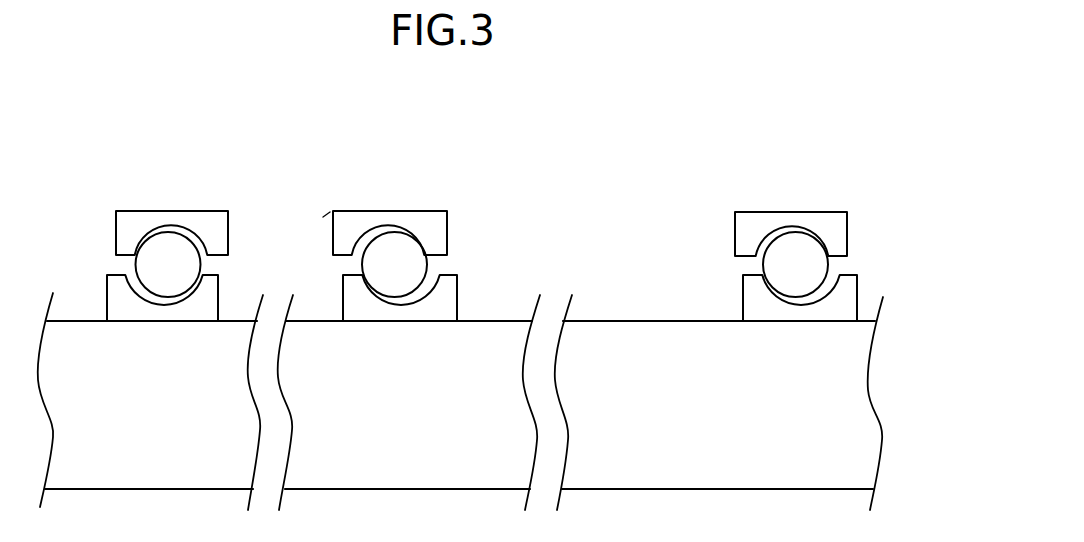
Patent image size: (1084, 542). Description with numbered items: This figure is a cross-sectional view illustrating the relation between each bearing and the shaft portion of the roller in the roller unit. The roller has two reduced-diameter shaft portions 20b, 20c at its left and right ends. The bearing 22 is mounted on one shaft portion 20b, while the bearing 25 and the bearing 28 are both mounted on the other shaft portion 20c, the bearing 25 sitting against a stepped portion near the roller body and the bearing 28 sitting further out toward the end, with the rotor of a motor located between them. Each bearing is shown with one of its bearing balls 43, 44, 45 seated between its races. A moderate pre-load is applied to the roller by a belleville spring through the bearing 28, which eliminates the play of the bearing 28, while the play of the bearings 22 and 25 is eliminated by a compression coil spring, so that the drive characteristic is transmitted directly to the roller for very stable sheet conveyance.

The shaft portion 20b is at (673, 340).
The shaft portion 20c is at (85, 342).
The bearing 22 is at (808, 217).
The bearing 25 is at (420, 227).
The bearing 28 is at (197, 222).
The bearing ball 43 is at (785, 257).
The bearing ball 44 is at (390, 250).
The bearing ball 45 is at (157, 263).